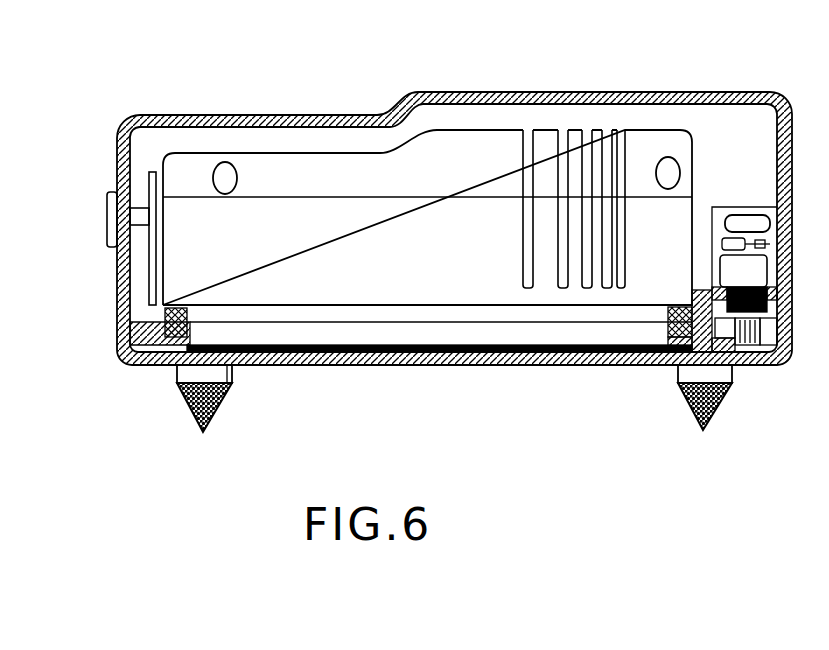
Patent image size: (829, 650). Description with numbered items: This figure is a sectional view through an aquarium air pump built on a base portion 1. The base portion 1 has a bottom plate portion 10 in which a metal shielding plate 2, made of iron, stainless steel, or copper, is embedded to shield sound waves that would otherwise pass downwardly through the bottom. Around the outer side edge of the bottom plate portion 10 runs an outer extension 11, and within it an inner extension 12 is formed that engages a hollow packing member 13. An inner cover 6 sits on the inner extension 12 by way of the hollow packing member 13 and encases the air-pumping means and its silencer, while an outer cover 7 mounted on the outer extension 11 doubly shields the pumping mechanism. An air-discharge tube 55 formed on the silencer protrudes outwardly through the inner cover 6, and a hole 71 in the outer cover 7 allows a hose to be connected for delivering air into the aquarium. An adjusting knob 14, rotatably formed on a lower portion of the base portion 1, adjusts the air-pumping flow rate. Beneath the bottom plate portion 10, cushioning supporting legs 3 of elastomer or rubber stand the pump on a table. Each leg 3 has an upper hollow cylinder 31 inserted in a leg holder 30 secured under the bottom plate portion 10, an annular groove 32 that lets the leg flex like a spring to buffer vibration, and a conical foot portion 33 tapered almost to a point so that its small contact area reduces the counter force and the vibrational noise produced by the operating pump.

The base portion 1 is at (468, 367).
The metal shielding plate 2 is at (548, 365).
The cushioning supporting leg 3 is at (454, 409).
The inner cover 6 is at (467, 130).
The outer cover 7 is at (670, 92).
The bottom plate portion 10 is at (405, 365).
The outer extension 11 is at (117, 305).
The inner extension 12 is at (132, 363).
The hollow packing member 13 is at (118, 345).
The adjusting knob 14 is at (773, 365).
The leg holder 30 is at (232, 372).
The upper hollow cylinder 31 is at (177, 370).
The annular groove 32 is at (172, 380).
The conical foot portion 33 is at (217, 410).
The air-discharge tube 55 is at (138, 207).
The hole 71 is at (115, 190).